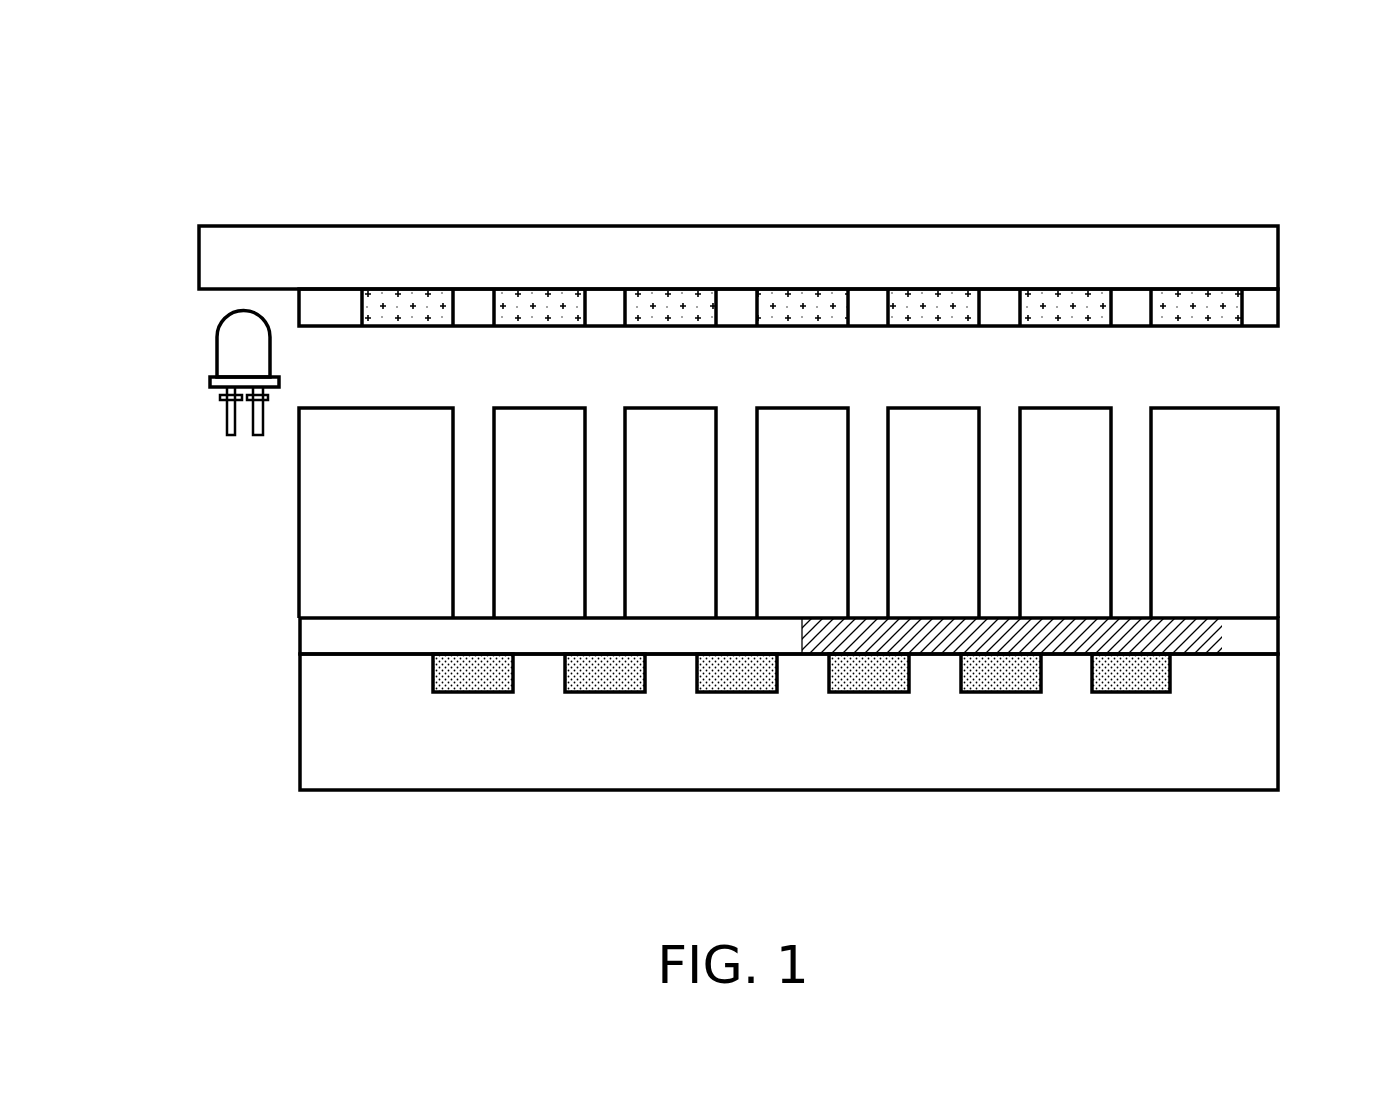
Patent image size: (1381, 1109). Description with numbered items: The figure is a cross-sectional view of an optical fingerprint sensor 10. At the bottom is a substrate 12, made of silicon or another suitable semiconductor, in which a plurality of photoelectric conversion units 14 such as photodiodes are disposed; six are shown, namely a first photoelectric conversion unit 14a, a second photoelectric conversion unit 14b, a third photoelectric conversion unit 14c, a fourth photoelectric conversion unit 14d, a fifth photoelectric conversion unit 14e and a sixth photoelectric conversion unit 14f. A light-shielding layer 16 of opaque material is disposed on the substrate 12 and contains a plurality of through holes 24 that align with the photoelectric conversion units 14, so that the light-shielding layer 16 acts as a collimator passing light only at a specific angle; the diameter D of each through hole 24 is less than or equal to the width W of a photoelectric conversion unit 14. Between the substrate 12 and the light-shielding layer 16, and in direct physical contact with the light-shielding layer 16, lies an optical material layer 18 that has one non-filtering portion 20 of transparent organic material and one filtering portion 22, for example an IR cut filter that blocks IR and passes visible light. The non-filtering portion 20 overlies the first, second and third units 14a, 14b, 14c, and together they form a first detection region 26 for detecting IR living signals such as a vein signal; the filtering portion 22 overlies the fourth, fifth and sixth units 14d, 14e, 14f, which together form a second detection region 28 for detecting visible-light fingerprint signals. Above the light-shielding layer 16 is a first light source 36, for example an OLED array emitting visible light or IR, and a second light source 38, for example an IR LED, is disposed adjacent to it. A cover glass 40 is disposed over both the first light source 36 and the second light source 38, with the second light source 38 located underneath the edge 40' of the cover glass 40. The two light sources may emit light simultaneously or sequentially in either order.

The optical fingerprint sensor 10 is at (1345, 173).
The substrate 12 is at (1272, 722).
The photoelectric conversion units 14 is at (72, 70).
The first photoelectric conversion unit 14a is at (475, 692).
The second photoelectric conversion unit 14b is at (607, 692).
The third photoelectric conversion unit 14c is at (739, 692).
The fourth photoelectric conversion unit 14d is at (871, 692).
The fifth photoelectric conversion unit 14e is at (1000, 692).
The sixth photoelectric conversion unit 14f is at (1131, 692).
The light-shielding layer 16 is at (1272, 458).
The optical material layer 18 is at (1283, 653).
The non-filtering portion 20 is at (310, 637).
The filtering portion 22 is at (1215, 635).
The through holes 24 is at (1004, 418).
The first detection region 26 is at (408, 578).
The second detection region 28 is at (802, 578).
The first light source 36 is at (1063, 295).
The second light source 38 is at (217, 353).
The cover glass 40 is at (777, 276).
The edge of the cover glass 40' is at (249, 193).
The diameter of the through hole D is at (1192, 549).
The width of the photoelectric conversion unit W is at (1090, 692).